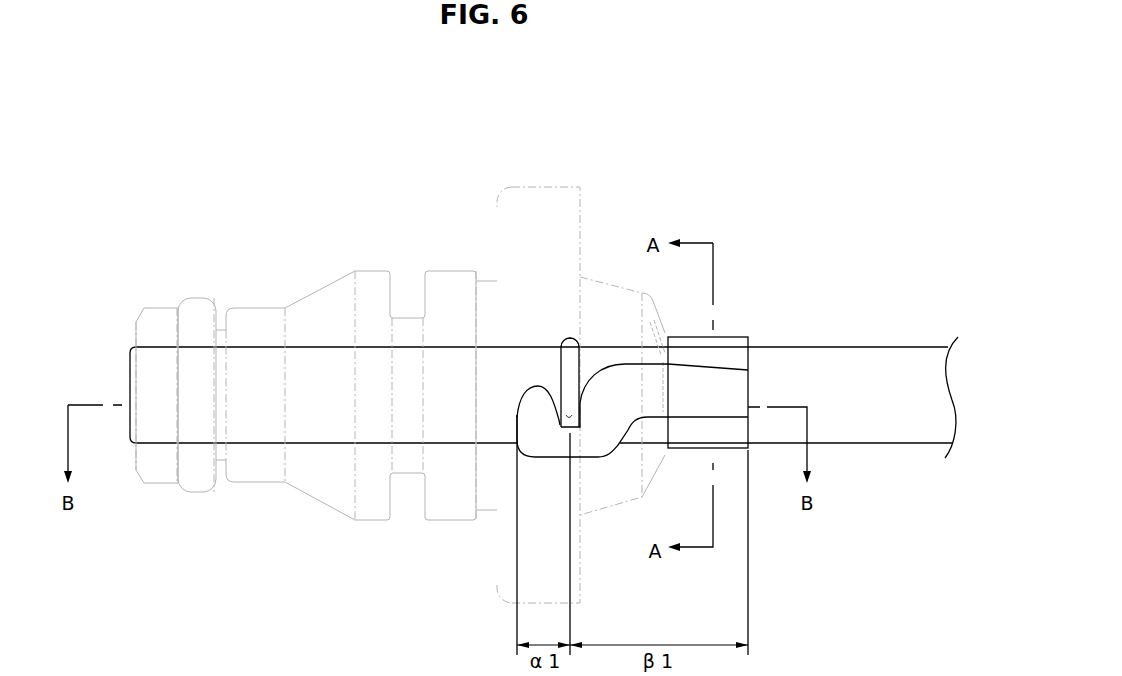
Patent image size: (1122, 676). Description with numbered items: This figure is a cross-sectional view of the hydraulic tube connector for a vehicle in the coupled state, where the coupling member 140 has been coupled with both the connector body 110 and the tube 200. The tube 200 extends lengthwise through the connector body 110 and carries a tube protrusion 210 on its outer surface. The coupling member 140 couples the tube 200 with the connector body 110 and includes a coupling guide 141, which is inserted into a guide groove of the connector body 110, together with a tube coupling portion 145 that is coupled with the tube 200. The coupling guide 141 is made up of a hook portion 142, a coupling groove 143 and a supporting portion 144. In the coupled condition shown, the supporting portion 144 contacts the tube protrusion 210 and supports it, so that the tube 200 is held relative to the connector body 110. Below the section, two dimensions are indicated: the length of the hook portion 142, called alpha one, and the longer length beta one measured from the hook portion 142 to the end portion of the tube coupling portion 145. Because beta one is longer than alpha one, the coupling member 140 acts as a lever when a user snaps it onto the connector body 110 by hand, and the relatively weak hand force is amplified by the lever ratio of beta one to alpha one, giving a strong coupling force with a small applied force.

The connector body 110 is at (342, 268).
The coupling member 140 is at (742, 326).
The coupling guide 141 is at (560, 265).
The hook portion 142 is at (530, 408).
The coupling groove 143 is at (570, 417).
The supporting portion 144 is at (613, 390).
The tube coupling portion 145 is at (690, 337).
The tube 200 is at (878, 449).
The tube protrusion 210 is at (570, 340).